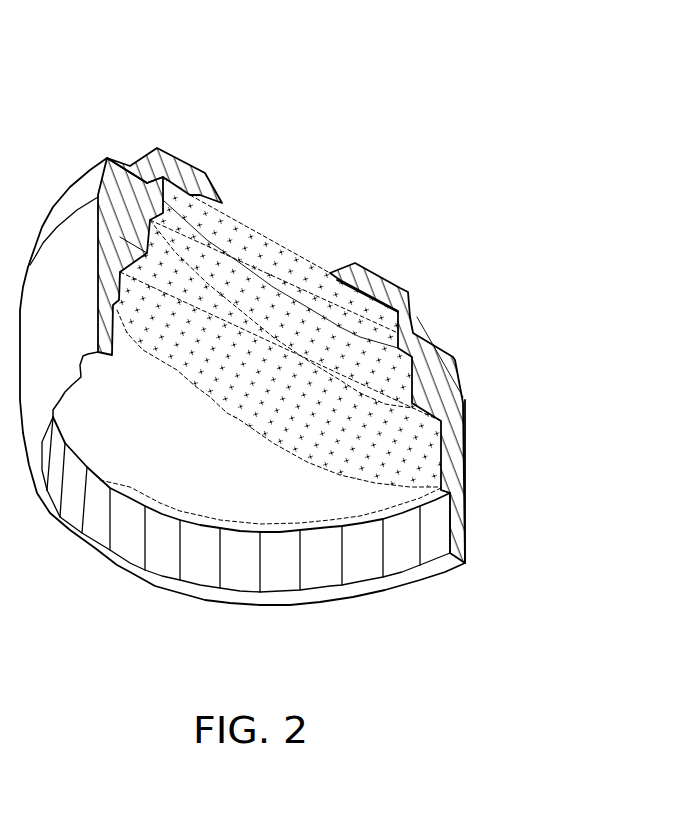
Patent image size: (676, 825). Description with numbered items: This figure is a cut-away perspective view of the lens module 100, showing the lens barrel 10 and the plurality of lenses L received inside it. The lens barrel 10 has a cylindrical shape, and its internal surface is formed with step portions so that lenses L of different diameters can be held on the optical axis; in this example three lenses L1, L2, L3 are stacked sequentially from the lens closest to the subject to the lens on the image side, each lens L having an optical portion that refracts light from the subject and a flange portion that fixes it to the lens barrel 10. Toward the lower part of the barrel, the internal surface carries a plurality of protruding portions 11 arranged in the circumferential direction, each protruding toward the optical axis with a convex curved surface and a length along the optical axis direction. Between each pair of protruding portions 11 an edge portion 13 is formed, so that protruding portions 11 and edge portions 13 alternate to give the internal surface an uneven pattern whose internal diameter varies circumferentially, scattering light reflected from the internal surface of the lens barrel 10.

The lens module 100 is at (282, 85).
The lens barrel 10 is at (127, 167).
The protruding portion 11 is at (323, 567).
The edge portion 13 is at (355, 572).
The lens L is at (355, 350).
The first lens L1 is at (368, 271).
The second lens L2 is at (361, 314).
The third lens L3 is at (336, 350).